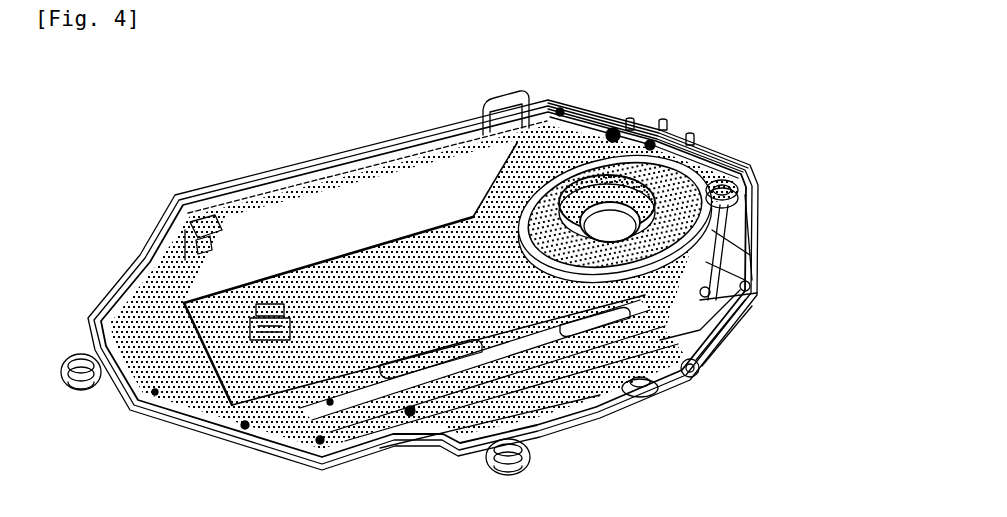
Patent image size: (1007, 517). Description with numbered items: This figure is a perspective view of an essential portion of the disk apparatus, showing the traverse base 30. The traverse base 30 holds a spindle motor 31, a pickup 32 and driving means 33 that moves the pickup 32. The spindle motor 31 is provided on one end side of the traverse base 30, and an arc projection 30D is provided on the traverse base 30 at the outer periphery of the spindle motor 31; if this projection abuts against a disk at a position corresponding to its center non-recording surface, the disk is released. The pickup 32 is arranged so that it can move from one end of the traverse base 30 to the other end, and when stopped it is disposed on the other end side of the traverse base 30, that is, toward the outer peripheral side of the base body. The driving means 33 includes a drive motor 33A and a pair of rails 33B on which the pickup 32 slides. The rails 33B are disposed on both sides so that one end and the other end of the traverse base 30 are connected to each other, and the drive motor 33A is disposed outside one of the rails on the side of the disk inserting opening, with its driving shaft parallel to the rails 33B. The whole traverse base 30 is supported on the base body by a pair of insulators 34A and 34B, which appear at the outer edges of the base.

The traverse base 30 is at (372, 195).
The arc projection 30D is at (702, 152).
The spindle motor 31 is at (632, 128).
The pickup 32 is at (265, 318).
The driving means 33 is at (753, 470).
The drive motor 33A is at (695, 378).
The rails 33B is at (642, 400).
The insulator 34A is at (74, 395).
The insulator 34B is at (533, 455).